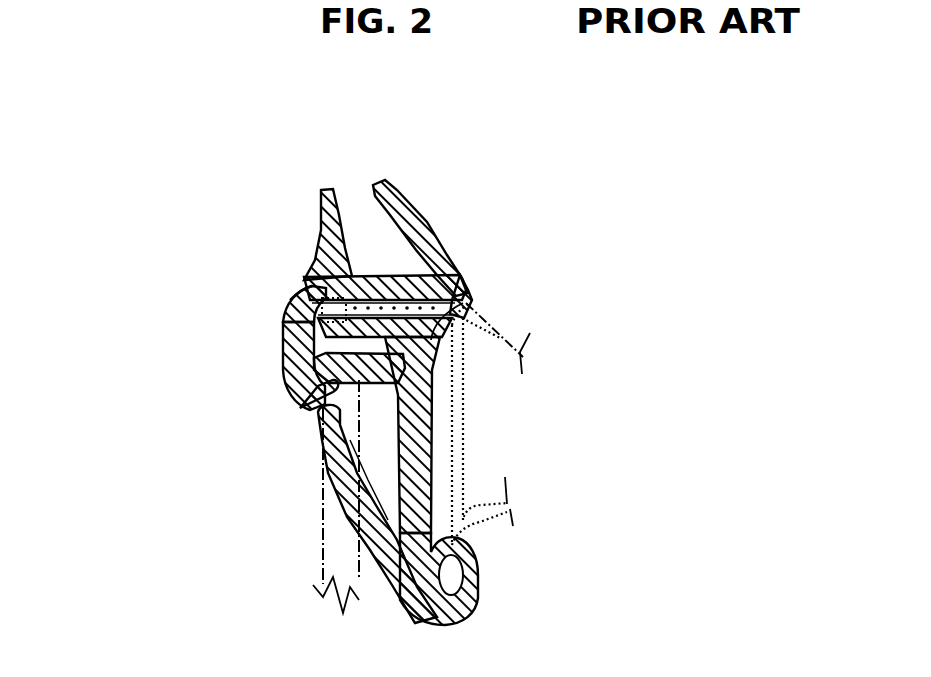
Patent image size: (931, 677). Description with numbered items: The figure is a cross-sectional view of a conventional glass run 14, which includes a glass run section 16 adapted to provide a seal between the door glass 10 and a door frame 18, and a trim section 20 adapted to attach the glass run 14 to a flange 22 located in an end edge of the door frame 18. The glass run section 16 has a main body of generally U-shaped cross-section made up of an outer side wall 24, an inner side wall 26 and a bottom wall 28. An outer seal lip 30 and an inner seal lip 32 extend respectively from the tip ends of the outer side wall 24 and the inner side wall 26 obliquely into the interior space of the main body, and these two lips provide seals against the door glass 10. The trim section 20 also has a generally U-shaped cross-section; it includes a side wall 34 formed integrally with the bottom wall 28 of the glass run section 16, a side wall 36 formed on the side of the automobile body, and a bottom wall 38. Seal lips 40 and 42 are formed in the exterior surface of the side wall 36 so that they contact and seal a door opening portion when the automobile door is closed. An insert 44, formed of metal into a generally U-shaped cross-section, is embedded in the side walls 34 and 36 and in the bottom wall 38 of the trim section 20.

The door glass 10 is at (246, 496).
The glass run 14 is at (383, 348).
The glass run section 16 is at (533, 424).
The door frame 18 is at (549, 334).
The trim section 20 is at (385, 186).
The flange 22 is at (217, 237).
The outer side wall 24 is at (230, 366).
The inner side wall 26 is at (516, 464).
The bottom wall 28 is at (270, 348).
The outer seal lip 30 is at (235, 414).
The inner seal lip 32 is at (286, 514).
The side wall 34 is at (482, 296).
The side wall 36 is at (495, 195).
The bottom wall 38 is at (229, 294).
The seal lip 40 is at (273, 176).
The seal lip 42 is at (420, 184).
The insert 44 is at (287, 271).